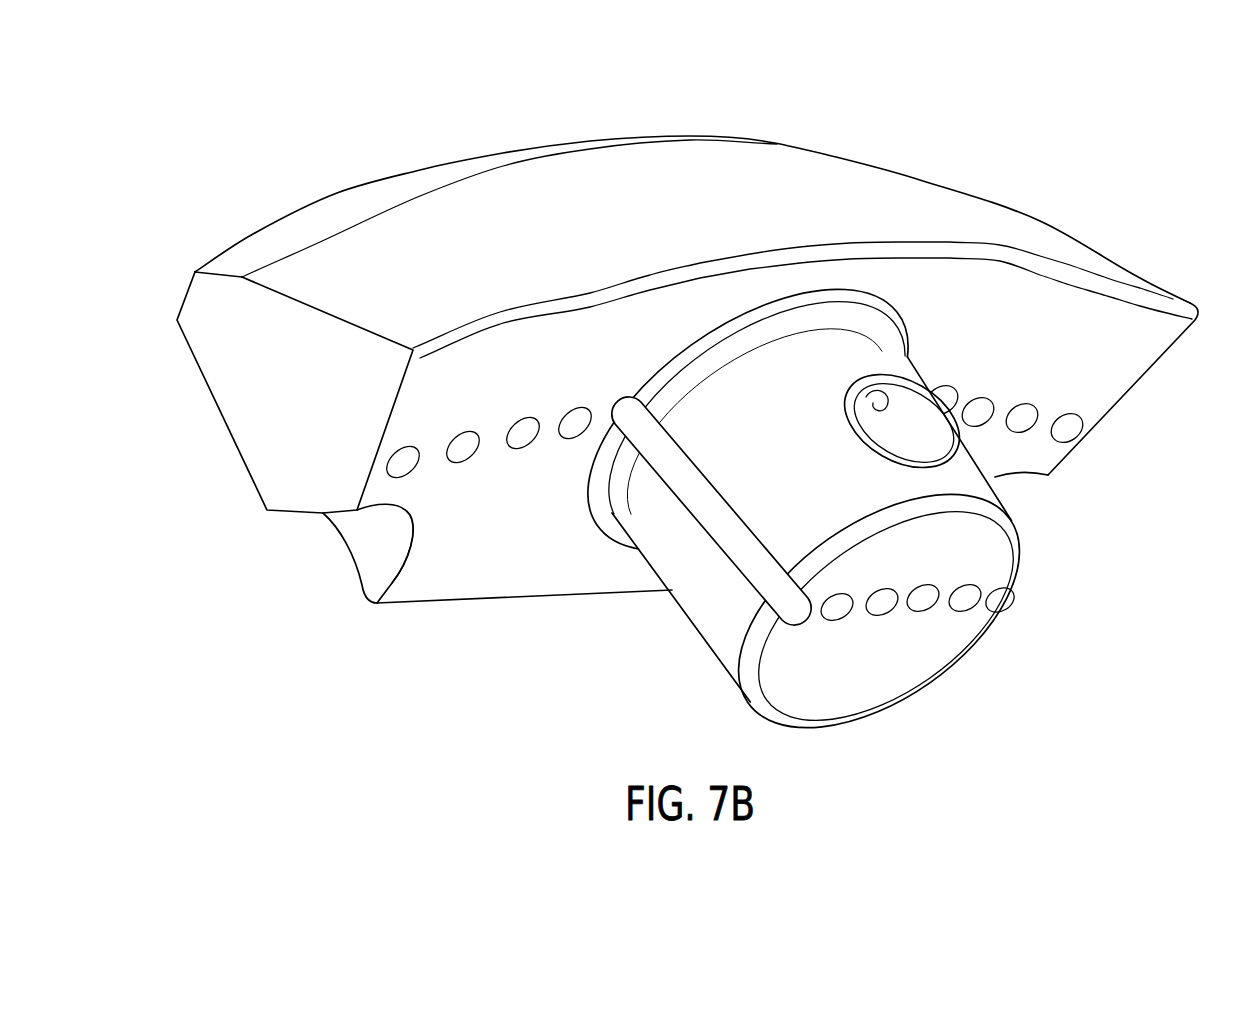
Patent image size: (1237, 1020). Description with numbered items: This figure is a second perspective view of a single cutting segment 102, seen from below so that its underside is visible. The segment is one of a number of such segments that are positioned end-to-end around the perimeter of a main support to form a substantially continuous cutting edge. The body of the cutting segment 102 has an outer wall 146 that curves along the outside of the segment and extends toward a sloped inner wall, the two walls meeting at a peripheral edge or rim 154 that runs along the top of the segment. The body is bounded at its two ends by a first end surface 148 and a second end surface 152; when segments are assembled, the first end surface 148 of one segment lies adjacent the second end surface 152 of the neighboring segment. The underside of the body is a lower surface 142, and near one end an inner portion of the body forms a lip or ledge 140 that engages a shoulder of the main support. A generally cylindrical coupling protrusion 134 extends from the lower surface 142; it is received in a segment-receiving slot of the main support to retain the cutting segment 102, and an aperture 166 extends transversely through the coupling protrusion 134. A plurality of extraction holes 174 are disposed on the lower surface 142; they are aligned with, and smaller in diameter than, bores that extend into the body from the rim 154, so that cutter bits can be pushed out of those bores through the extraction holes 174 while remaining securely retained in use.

The cutting segment 102 is at (701, 355).
The coupling protrusion 134 is at (824, 532).
The lip or ledge 140 is at (366, 590).
The lower surface 142 is at (406, 567).
The outer wall 146 is at (918, 172).
The first end surface 148 is at (247, 433).
The second end surface 152 is at (1160, 358).
The peripheral edge or rim 154 is at (311, 207).
The aperture 166 is at (866, 411).
The extraction holes 174 is at (560, 434).